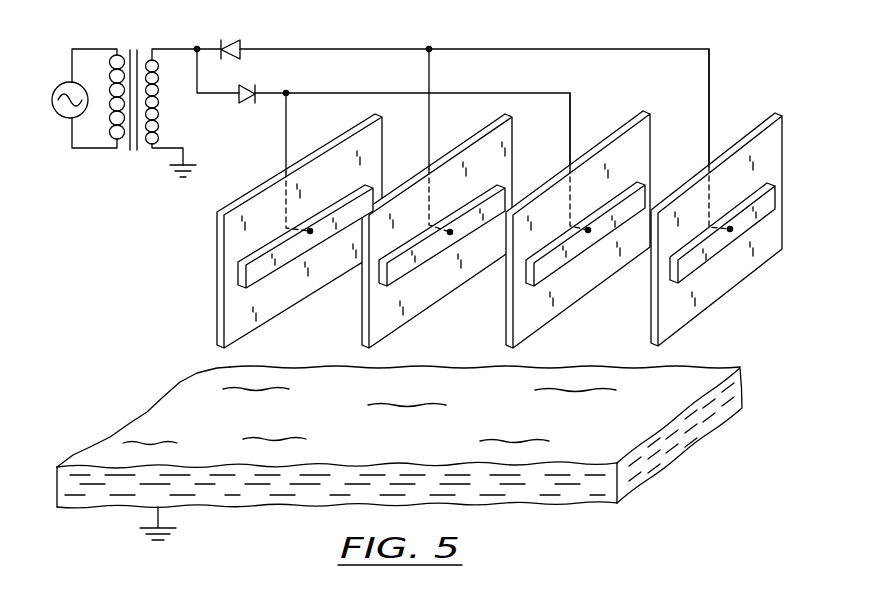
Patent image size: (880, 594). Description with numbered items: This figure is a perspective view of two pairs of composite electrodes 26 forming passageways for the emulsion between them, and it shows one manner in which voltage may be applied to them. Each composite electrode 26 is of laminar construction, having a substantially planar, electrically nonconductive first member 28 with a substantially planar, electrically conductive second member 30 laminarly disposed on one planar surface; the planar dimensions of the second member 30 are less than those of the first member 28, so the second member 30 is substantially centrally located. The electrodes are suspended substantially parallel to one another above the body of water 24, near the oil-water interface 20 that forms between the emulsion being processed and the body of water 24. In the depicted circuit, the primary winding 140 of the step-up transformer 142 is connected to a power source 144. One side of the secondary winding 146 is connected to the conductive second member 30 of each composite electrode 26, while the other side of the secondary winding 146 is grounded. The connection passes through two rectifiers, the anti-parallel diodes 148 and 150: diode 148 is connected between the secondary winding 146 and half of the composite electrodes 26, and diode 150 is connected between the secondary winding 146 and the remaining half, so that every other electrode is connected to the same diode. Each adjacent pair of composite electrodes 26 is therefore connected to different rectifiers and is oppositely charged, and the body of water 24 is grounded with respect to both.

The oil-water interface 20 is at (425, 438).
The body of water 24 is at (723, 405).
The composite electrode 26 is at (491, 198).
The first member 28 is at (220, 328).
The second member 30 is at (247, 275).
The primary winding 140 is at (113, 127).
The step-up transformer 142 is at (163, 40).
The power source 144 is at (63, 83).
The secondary winding 146 is at (162, 115).
The diode 148 is at (237, 40).
The diode 150 is at (248, 86).